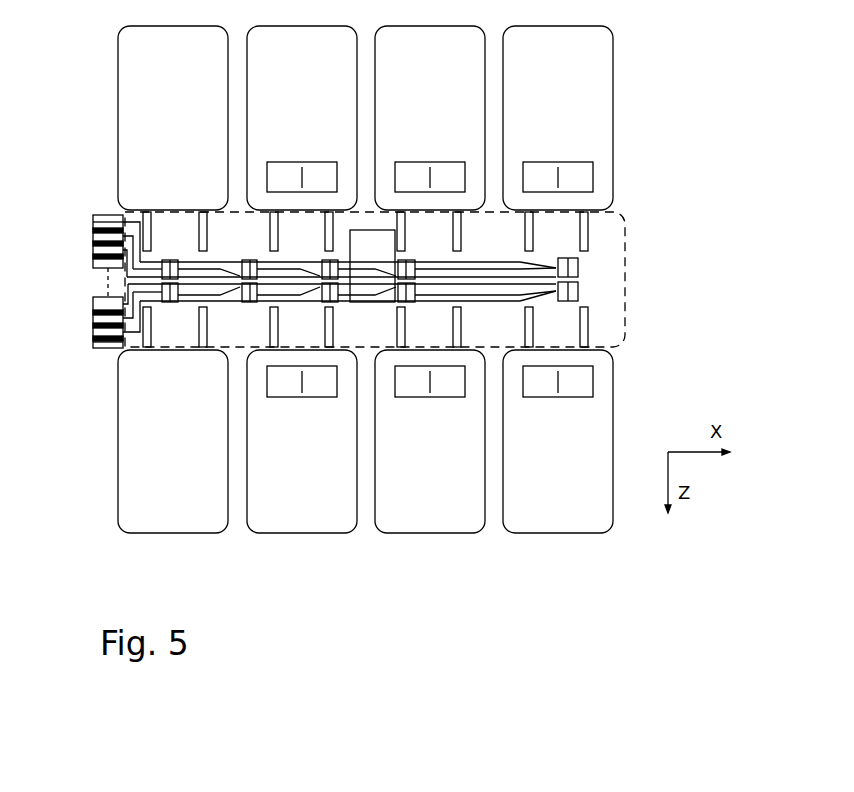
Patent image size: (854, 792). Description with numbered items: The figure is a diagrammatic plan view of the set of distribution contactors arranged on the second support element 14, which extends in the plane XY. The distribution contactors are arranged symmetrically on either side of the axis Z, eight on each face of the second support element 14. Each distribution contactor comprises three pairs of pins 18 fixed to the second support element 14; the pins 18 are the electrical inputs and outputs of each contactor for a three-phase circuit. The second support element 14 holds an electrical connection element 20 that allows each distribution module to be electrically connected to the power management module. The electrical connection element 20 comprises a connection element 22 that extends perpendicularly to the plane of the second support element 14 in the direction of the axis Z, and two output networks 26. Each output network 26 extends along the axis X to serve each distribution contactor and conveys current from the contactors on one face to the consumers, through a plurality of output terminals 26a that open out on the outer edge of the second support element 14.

The second support element 14 is at (612, 245).
The pins 18 is at (270, 350).
The electrical connection element 20 is at (165, 318).
The connection element 22 is at (366, 522).
The output network 26 is at (78, 237).
The output terminals 26a is at (100, 218).